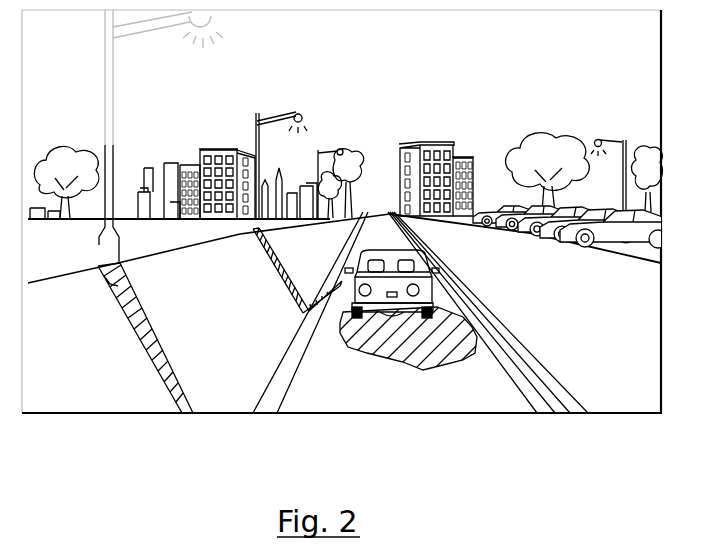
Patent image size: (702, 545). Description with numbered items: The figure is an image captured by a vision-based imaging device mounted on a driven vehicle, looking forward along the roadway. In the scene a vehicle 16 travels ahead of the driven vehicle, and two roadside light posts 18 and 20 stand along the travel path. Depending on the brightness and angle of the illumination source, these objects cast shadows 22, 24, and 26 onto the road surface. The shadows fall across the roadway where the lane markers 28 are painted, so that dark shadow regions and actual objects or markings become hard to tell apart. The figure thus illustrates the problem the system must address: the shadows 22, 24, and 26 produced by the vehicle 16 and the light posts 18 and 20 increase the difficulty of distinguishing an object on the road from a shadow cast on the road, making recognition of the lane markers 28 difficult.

The vehicle 16 is at (440, 280).
The light post 18 is at (105, 98).
The light post 20 is at (257, 115).
The shadow 22 is at (164, 363).
The shadow 24 is at (288, 288).
The shadow 26 is at (475, 327).
The lane markers 28 is at (502, 363).